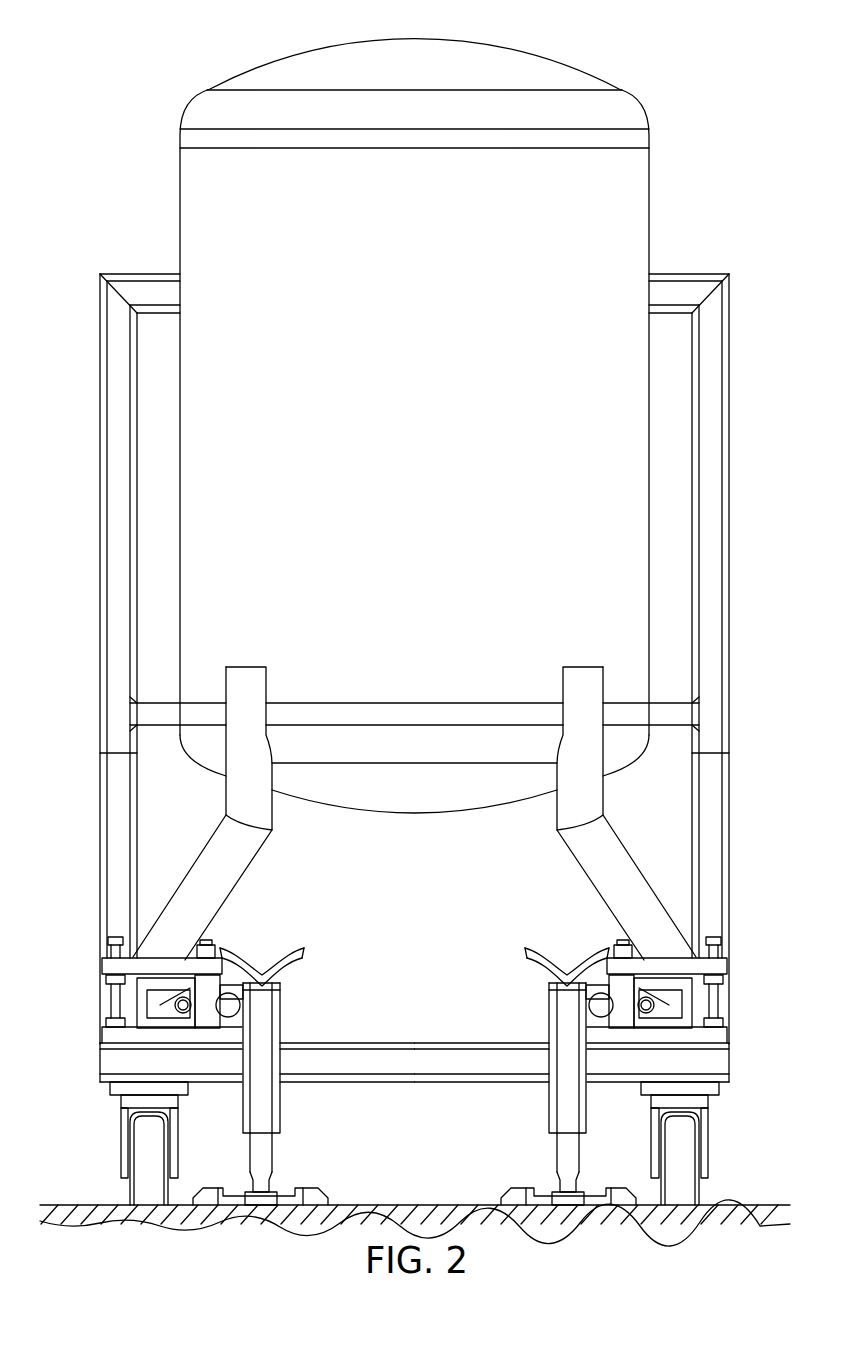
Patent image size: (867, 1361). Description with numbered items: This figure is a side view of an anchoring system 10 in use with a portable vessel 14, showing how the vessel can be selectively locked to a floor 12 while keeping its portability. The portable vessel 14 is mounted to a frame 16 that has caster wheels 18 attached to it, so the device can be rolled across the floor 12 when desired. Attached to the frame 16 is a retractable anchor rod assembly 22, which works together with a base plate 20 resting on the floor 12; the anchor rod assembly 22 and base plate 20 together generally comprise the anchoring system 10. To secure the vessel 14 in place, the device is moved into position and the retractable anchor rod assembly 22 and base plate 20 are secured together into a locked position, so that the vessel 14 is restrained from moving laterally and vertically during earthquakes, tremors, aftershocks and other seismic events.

The anchoring system 10 is at (309, 934).
The floor 12 is at (60, 1206).
The portable vessel 14 is at (168, 134).
The frame 16 is at (98, 745).
The caster wheels 18 is at (700, 1190).
The base plate 20 is at (225, 1188).
The retractable anchor rod assembly 22 is at (280, 1112).